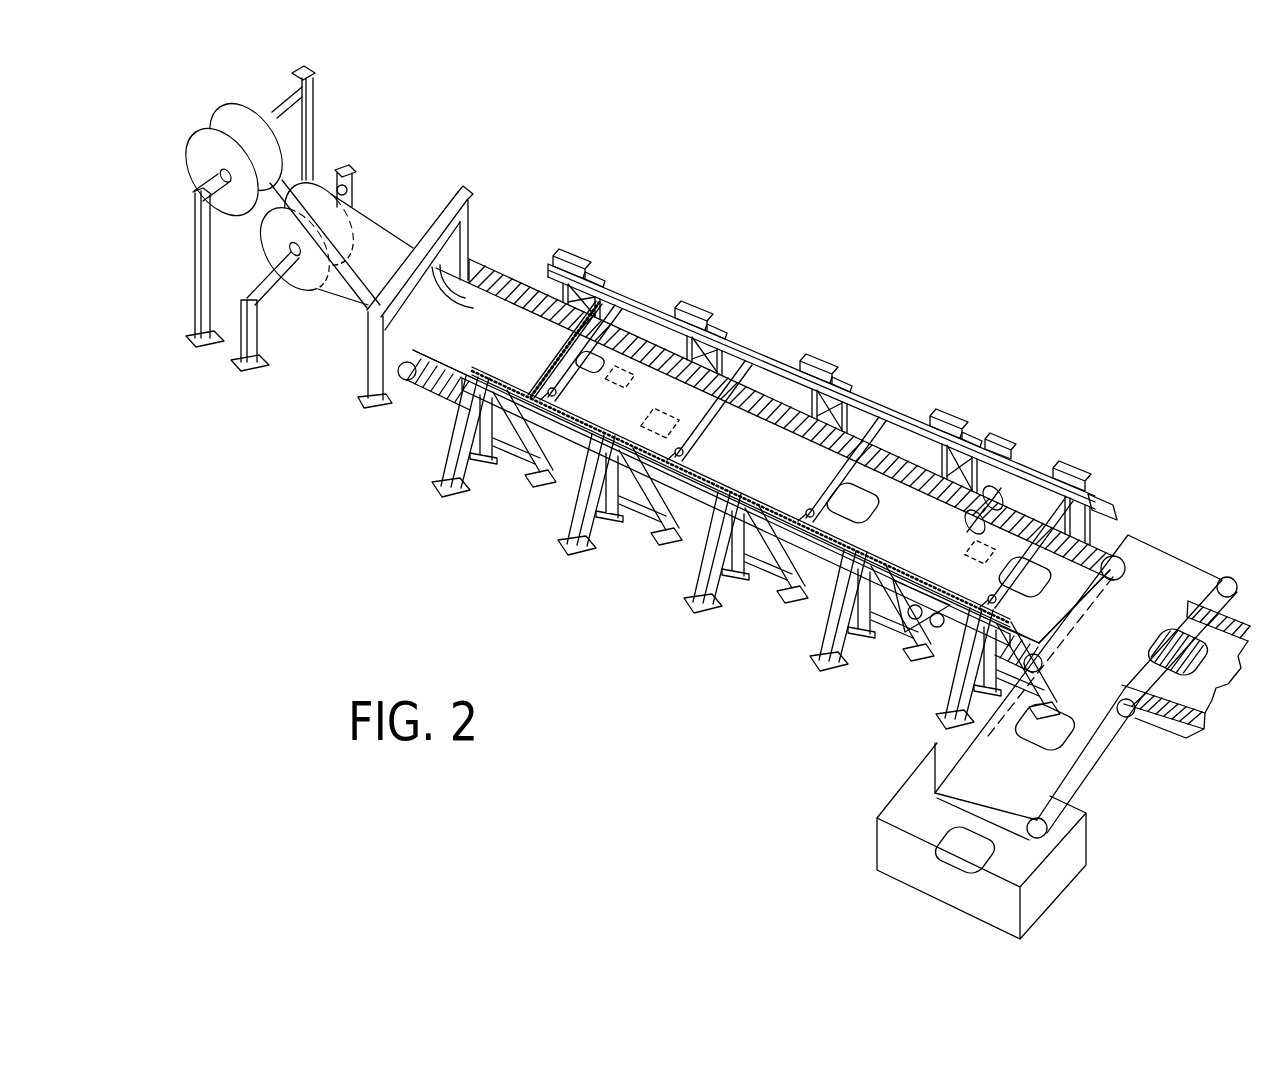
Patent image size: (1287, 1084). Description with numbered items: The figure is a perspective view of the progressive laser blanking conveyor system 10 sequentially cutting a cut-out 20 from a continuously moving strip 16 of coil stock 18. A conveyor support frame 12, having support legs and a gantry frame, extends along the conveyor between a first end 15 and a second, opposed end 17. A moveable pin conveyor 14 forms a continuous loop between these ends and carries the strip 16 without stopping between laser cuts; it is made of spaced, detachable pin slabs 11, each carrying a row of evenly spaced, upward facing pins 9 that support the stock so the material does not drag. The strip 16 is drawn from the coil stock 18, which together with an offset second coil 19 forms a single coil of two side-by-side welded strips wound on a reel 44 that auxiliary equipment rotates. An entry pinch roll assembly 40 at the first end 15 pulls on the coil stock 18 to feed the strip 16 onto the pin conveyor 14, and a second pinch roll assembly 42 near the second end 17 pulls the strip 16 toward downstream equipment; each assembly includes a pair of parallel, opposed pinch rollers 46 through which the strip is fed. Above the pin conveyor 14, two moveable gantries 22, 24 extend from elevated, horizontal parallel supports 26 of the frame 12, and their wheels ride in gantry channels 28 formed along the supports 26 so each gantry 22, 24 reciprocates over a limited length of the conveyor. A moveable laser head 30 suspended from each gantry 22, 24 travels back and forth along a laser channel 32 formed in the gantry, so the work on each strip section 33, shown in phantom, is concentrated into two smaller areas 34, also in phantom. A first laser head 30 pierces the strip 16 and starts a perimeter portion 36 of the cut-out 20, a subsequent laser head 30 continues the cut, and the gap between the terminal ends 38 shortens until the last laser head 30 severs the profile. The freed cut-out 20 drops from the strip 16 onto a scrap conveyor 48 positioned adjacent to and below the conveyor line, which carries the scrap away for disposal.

The pins 9 is at (1107, 547).
The conveyor system 10 is at (883, 232).
The pin slab 11 is at (1107, 552).
The conveyor support frame 12 is at (480, 440).
The pin conveyor 14 is at (500, 262).
The first end 15 is at (352, 433).
The strip 16 is at (446, 349).
The second end 17 is at (843, 835).
The coil stock 18 is at (316, 290).
The coil 19 is at (215, 125).
The cut-out 20 is at (1060, 750).
The gantry 22 is at (545, 388).
The gantry 24 is at (995, 607).
The horizontal supports 26 is at (430, 378).
The gantry channel 28 is at (616, 300).
The laser head 30 is at (833, 485).
The laser channel 32 is at (560, 342).
The section 33 is at (780, 356).
The smaller areas 34 is at (548, 356).
The perimeter portion 36 is at (637, 318).
The terminal ends 38 is at (893, 453).
The entry pinch roll assembly 40 is at (461, 197).
The second pinch roll assembly 42 is at (1013, 465).
The reel 44 is at (282, 303).
The pinch rollers 46 is at (473, 308).
The scrap conveyor 48 is at (980, 782).